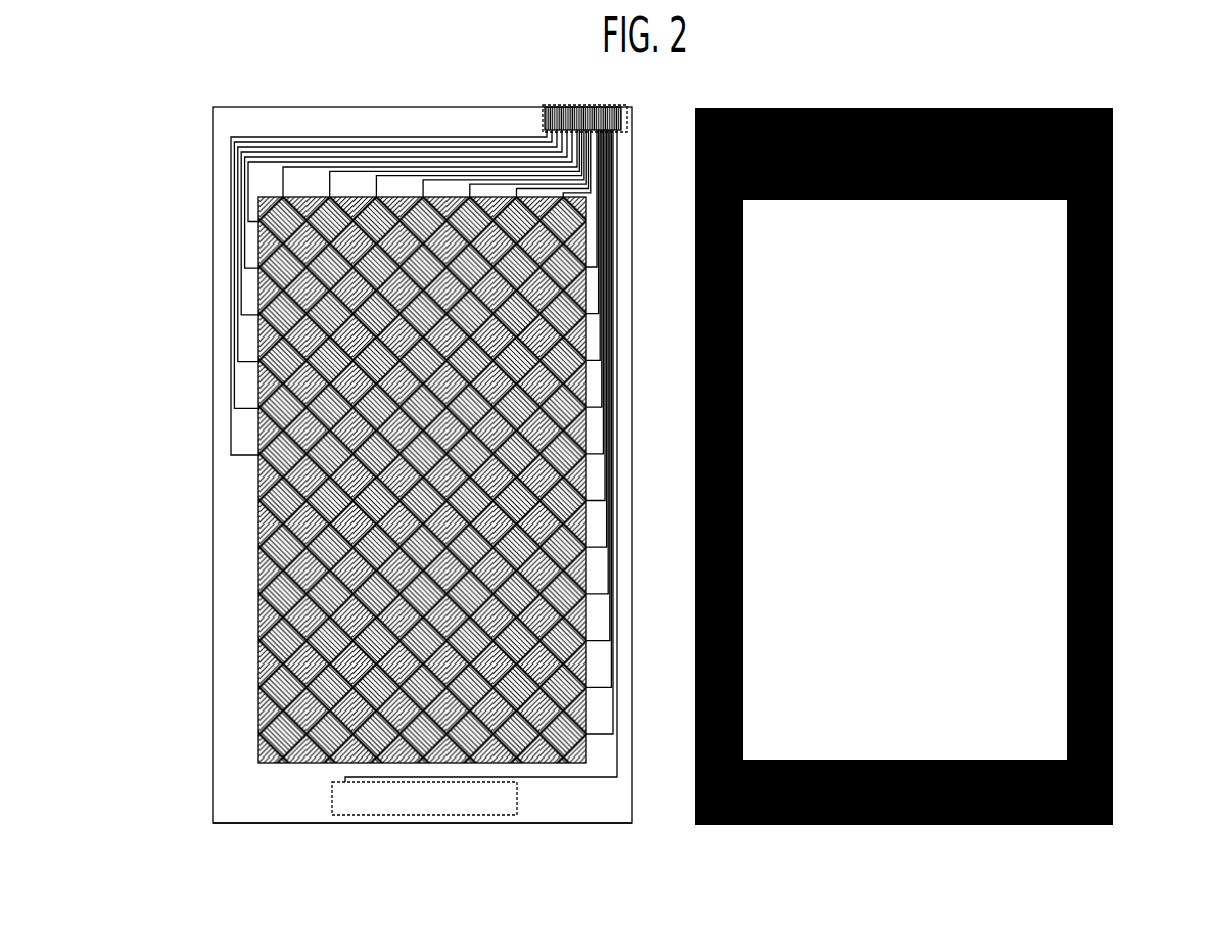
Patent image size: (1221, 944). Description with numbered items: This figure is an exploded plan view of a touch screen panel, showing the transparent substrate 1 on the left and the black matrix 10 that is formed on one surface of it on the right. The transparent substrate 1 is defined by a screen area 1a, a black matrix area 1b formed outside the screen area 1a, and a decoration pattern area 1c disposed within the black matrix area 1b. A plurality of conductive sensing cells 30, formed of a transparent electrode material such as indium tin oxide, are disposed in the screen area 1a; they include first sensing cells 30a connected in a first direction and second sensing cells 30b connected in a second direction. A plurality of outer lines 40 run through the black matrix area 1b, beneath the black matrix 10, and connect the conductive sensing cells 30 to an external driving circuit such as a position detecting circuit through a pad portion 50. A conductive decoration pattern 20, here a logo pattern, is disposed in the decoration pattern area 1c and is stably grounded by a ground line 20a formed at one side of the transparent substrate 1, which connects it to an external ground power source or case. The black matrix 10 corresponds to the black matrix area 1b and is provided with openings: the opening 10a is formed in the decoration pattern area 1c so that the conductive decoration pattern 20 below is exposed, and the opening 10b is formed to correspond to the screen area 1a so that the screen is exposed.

The transparent substrate 1 is at (417, 106).
The screen area 1a is at (257, 651).
The black matrix area 1b is at (243, 519).
The decoration pattern area 1c is at (330, 800).
The black matrix 10 is at (1113, 751).
The opening 10a is at (925, 825).
The opening 10b is at (1043, 622).
The conductive decoration pattern 20 is at (447, 815).
The ground line 20a is at (619, 750).
The conductive sensing cells 30 is at (430, 118).
The first sensing cells 30a is at (270, 197).
The second sensing cells 30b is at (302, 197).
The outer lines 40 is at (613, 701).
The pad portion 50 is at (543, 112).